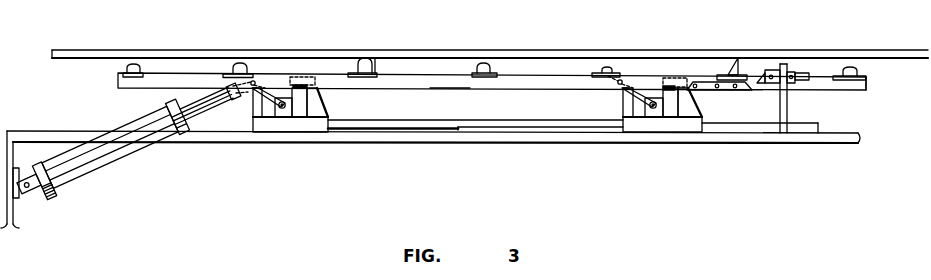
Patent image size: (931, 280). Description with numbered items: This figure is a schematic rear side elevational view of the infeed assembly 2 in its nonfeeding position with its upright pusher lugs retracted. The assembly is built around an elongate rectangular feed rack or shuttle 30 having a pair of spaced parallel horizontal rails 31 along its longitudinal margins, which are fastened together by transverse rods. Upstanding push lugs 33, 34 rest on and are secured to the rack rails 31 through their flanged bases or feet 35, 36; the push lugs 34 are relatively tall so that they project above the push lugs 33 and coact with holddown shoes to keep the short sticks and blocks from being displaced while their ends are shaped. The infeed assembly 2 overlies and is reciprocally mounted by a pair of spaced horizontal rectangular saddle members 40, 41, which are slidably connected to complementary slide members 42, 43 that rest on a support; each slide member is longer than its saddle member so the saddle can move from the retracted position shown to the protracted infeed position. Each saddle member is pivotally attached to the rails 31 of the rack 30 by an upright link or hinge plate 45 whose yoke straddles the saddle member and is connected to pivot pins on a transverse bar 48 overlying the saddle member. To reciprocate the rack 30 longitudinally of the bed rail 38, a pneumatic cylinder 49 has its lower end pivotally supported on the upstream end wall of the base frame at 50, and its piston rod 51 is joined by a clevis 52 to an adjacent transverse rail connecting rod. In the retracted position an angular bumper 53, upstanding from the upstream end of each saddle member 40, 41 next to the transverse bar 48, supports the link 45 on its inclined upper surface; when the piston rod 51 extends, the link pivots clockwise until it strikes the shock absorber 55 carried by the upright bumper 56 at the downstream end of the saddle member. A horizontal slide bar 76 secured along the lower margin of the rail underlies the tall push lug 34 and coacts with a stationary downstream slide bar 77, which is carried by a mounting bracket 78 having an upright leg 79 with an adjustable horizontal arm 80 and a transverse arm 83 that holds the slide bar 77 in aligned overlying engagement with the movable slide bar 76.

The infeed assembly 2 is at (114, 82).
The feed rack 30 is at (867, 85).
The rails 31 is at (448, 90).
The push lugs 33 is at (132, 63).
The push lugs 34 is at (378, 58).
The flanged bases 35 is at (498, 88).
The flanged bases 36 is at (377, 78).
The bed rail 38 is at (83, 50).
The saddle member 40 is at (268, 128).
The saddle member 41 is at (643, 128).
The slide member 42 is at (415, 128).
The slide member 43 is at (735, 134).
The link 45 is at (275, 88).
The transverse bar 48 is at (283, 112).
The pneumatic cylinder 49 is at (100, 173).
The pivotal support 50 is at (19, 197).
The piston rod 51 is at (200, 97).
The clevis 52 is at (242, 96).
The angular bumper 53 is at (250, 100).
The shock absorber 55 is at (675, 82).
The upright bumper 56 is at (328, 95).
The slide bar 76 is at (728, 89).
The slide bar 77 is at (803, 73).
The mounting bracket 78 is at (792, 115).
The upright leg 79 is at (778, 118).
The horizontal arm 80 is at (775, 90).
The transverse arm 83 is at (793, 85).